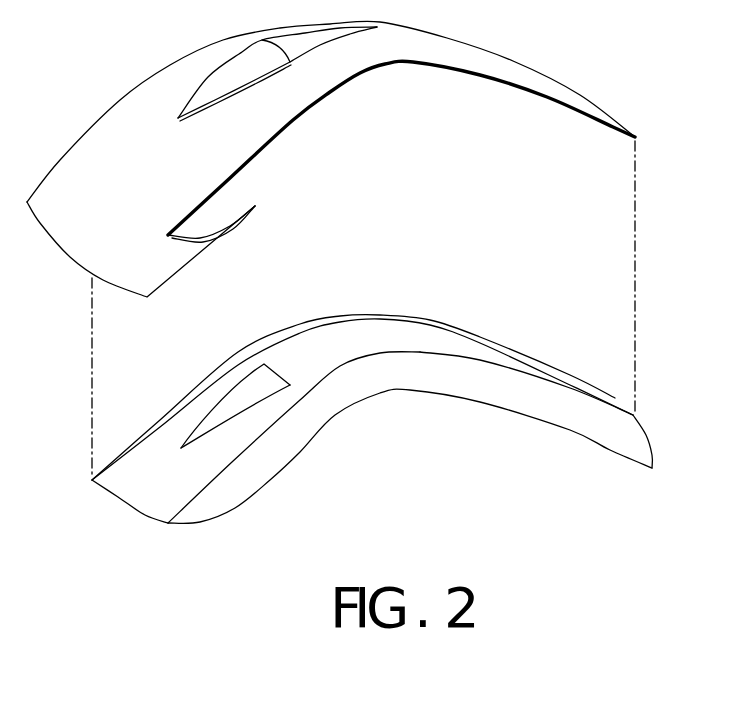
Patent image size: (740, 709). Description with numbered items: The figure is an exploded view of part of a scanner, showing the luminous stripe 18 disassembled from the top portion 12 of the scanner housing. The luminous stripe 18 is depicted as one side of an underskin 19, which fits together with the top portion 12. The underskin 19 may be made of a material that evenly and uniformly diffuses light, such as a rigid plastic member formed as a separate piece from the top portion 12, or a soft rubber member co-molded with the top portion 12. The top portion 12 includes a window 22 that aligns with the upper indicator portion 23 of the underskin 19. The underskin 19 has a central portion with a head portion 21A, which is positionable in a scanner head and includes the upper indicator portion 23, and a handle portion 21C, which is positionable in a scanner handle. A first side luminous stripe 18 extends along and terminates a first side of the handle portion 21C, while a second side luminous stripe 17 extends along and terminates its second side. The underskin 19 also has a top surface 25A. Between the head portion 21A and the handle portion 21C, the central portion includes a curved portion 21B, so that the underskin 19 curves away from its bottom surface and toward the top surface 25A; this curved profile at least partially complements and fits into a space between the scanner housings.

The top portion 12 is at (130, 117).
The window 22 is at (240, 65).
The underskin 19 is at (397, 289).
The second side luminous stripe 17 is at (235, 353).
The first side luminous stripe 18 is at (365, 380).
The head portion 21A is at (160, 452).
The curved portion 21B is at (345, 337).
The handle portion 21C is at (503, 360).
The upper indicator portion 23 is at (270, 378).
The top surface 25A is at (412, 350).